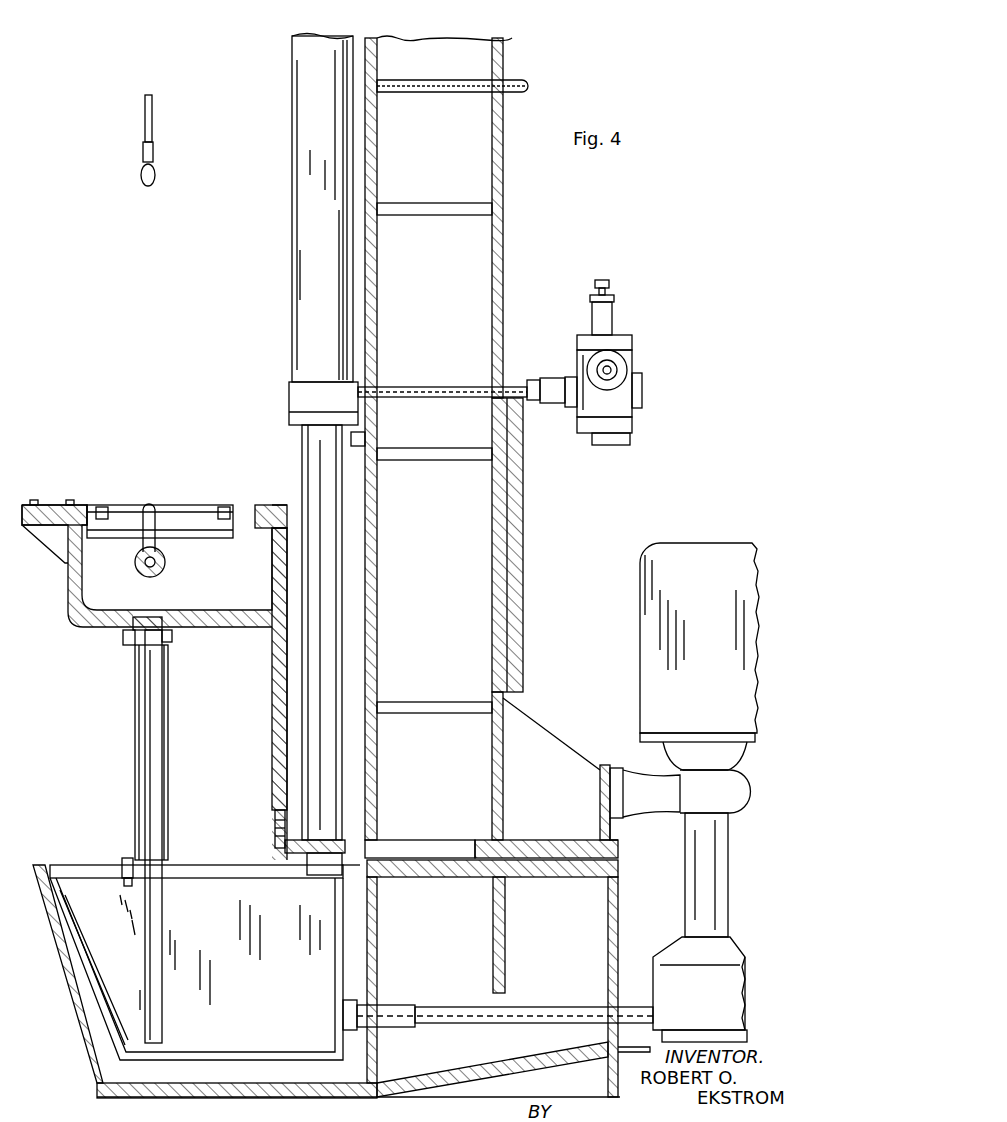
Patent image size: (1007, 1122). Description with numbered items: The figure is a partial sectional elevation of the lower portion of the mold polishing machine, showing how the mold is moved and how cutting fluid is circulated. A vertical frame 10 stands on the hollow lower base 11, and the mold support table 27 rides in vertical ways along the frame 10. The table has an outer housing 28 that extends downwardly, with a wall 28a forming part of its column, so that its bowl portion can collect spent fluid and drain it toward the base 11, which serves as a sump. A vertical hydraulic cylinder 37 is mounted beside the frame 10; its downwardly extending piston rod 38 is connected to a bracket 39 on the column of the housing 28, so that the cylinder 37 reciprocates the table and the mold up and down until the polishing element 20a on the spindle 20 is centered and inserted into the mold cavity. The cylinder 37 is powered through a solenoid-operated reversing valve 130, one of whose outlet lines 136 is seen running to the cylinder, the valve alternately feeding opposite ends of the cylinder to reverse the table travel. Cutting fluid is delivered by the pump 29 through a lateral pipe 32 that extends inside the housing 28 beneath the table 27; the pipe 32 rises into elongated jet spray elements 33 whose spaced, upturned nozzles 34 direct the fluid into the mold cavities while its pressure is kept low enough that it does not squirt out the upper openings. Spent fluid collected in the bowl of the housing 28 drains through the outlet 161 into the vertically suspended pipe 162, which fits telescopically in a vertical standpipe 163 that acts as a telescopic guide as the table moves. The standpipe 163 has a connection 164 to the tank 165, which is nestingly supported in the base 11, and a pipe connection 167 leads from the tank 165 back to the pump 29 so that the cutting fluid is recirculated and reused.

The vertical frame 10 is at (505, 262).
The lower base 11 is at (618, 874).
The spindle 20 is at (152, 118).
The polishing element 20a is at (155, 182).
The mold support table 27 is at (40, 503).
The outer housing 28 is at (78, 630).
The tank wall 28a is at (275, 735).
The pump 29 is at (713, 1021).
The lateral pipe 32 is at (166, 565).
The jet spray element 33 is at (155, 510).
The nozzle 34 is at (149, 508).
The vertical hydraulic cylinder 37 is at (335, 129).
The piston rod 38 is at (340, 500).
The bracket 39 is at (280, 858).
The reversing valve 130 is at (637, 351).
The outlet line 136 is at (466, 385).
The outlet 161 is at (146, 617).
The pipe 162 is at (162, 918).
The standpipe 163 is at (165, 785).
The connection 164 is at (128, 856).
The tank 165 is at (262, 986).
The pipe connection 167 is at (458, 1007).